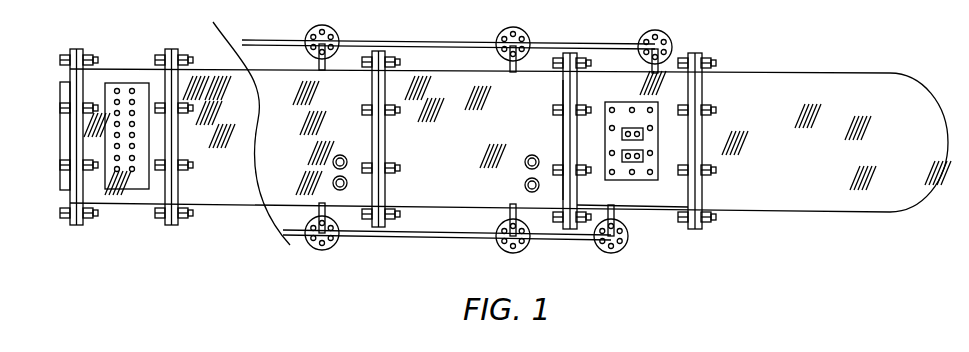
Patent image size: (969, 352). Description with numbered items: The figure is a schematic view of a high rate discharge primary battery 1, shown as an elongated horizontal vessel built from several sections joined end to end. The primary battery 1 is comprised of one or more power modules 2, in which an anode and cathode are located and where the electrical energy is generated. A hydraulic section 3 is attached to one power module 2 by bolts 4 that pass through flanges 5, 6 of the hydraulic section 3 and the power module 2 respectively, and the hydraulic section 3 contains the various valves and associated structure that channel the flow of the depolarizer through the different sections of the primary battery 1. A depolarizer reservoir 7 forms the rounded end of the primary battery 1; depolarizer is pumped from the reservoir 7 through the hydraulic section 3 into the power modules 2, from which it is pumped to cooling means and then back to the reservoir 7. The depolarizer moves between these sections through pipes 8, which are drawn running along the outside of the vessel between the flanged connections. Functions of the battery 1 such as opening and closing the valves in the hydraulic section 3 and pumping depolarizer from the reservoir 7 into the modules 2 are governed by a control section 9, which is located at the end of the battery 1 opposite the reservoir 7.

The high rate discharge primary battery 1 is at (474, 30).
The power module 2 is at (232, 197).
The hydraulic section 3 is at (647, 200).
The bolt 4 is at (560, 106).
The flange of the hydraulic section 5 is at (575, 133).
The flange of the power module 6 is at (562, 147).
The depolarizer reservoir 7 is at (755, 203).
The pipe 8 is at (476, 236).
The control section 9 is at (130, 200).